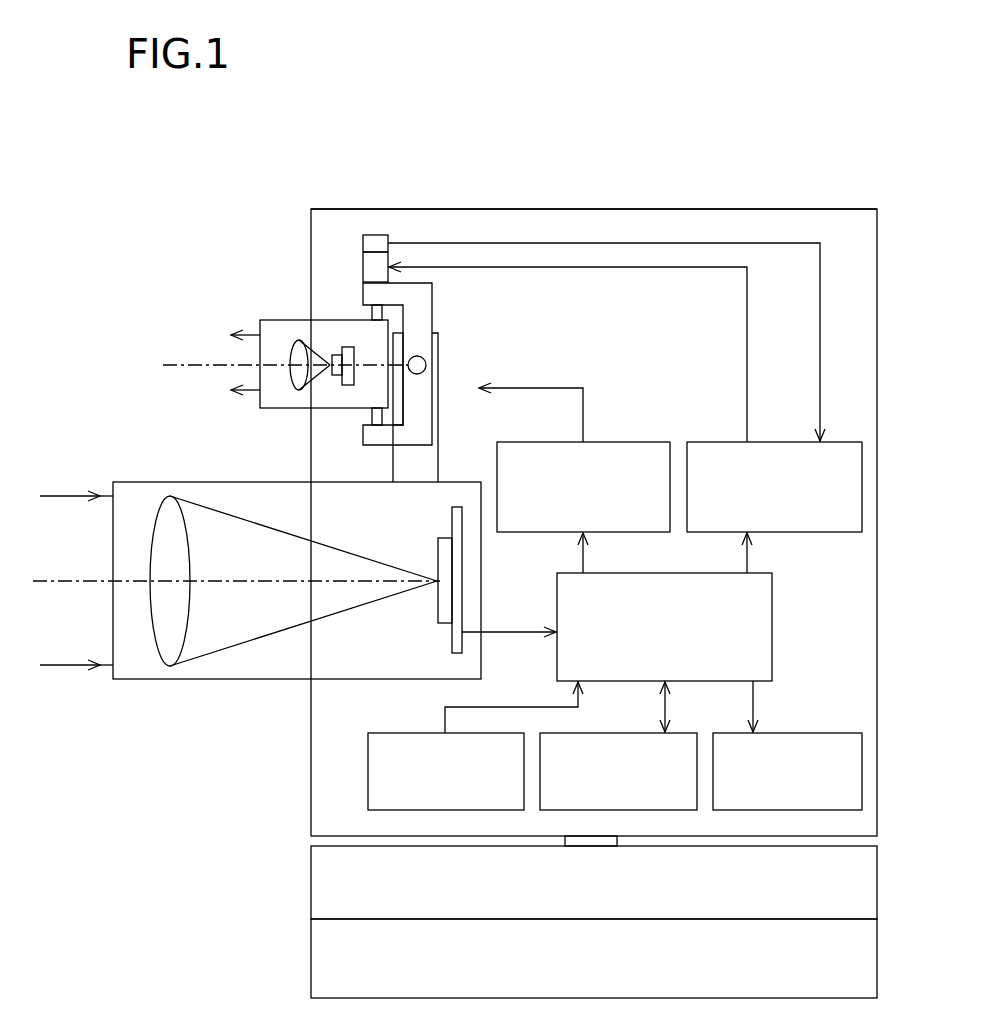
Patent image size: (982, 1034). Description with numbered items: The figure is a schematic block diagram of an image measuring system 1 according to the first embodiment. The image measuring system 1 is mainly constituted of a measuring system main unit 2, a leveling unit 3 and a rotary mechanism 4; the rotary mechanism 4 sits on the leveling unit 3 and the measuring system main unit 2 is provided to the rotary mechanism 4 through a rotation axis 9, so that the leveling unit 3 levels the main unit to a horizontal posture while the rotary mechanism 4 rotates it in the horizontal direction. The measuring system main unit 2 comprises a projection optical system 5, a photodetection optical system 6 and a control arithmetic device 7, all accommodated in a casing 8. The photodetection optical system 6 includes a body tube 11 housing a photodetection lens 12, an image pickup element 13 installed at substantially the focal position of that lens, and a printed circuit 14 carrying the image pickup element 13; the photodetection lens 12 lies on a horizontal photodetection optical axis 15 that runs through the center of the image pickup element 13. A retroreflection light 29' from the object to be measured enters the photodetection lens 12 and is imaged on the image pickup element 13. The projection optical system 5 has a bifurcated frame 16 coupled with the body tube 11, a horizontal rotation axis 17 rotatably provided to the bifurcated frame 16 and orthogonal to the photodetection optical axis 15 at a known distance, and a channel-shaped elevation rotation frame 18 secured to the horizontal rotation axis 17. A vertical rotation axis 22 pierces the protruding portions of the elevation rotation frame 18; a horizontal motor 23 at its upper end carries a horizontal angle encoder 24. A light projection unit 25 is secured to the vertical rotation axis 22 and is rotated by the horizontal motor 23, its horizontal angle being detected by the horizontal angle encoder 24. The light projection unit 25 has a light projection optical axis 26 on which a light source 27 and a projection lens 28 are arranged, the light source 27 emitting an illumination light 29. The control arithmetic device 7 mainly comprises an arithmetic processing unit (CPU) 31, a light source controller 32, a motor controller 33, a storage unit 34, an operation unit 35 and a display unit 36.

The image measuring system 1 is at (157, 201).
The measuring system main unit 2 is at (690, 207).
The leveling unit 3 is at (308, 962).
The rotary mechanism 4 is at (308, 882).
The projection optical system 5 is at (469, 369).
The photodetection optical system 6 is at (237, 682).
The control arithmetic device 7 is at (622, 409).
The casing 8 is at (477, 209).
The rotation axis 9 is at (617, 843).
The body tube 11 is at (273, 482).
The photodetection lens 12 is at (155, 655).
The image pickup element 13 is at (440, 538).
The printed circuit 14 is at (452, 640).
The photodetection optical axis 15 is at (95, 578).
The bifurcated frame 16 is at (438, 438).
The horizontal rotation axis 17 is at (423, 357).
The elevation rotation frame 18 is at (433, 310).
The vertical rotation axis 22 is at (370, 413).
The horizontal motor 23 is at (363, 273).
The horizontal angle encoder 24 is at (362, 243).
The light projection unit 25 is at (291, 318).
The light projection optical axis 26 is at (230, 362).
The light source 27 is at (348, 347).
The projection lens 28 is at (292, 380).
The illumination light 29 is at (225, 333).
The retroreflection light 29' is at (76, 547).
The arithmetic processing unit (CPU) 31 is at (772, 635).
The light source controller 32 is at (537, 535).
The motor controller 33 is at (785, 533).
The storage unit 34 is at (630, 733).
The operation unit 35 is at (398, 733).
The display unit 36 is at (798, 733).